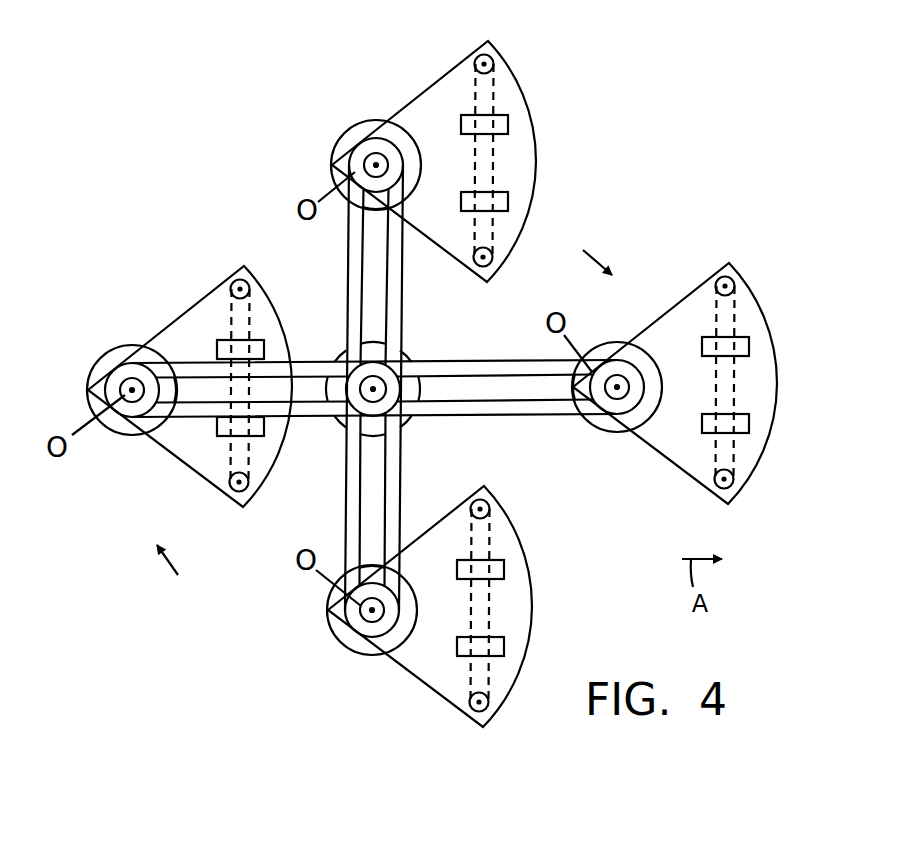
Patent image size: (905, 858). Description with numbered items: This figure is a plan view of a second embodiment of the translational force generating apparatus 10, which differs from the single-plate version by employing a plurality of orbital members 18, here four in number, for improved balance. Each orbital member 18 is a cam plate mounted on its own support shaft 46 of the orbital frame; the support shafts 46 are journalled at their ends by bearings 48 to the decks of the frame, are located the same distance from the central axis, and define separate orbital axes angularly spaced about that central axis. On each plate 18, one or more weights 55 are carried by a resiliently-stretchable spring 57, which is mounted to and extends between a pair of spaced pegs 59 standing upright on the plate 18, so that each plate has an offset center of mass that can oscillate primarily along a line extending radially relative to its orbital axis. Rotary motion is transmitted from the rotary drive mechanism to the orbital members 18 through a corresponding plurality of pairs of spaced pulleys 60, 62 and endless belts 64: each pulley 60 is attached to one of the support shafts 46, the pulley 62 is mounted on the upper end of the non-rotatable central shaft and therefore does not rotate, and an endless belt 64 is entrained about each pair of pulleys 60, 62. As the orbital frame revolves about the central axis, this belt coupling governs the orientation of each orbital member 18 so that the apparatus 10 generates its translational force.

The translational force generating apparatus 10 is at (664, 156).
The orbital member 18 is at (530, 96).
The support shaft 46 is at (377, 152).
The bearing 48 is at (318, 143).
The weight 55 is at (512, 192).
The spring 57 is at (494, 231).
The peg 59 is at (497, 56).
The pulley 60 is at (352, 168).
The pulley 62 is at (403, 388).
The endless belt 64 is at (404, 290).